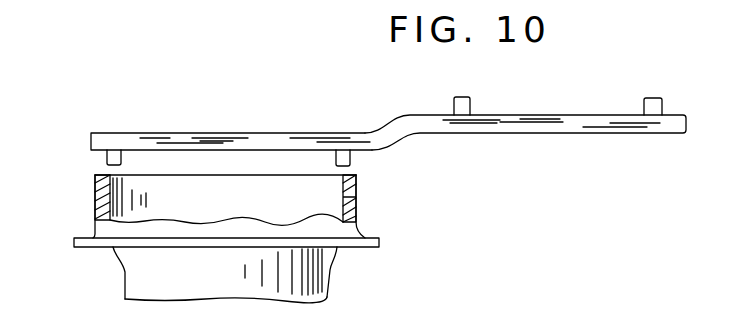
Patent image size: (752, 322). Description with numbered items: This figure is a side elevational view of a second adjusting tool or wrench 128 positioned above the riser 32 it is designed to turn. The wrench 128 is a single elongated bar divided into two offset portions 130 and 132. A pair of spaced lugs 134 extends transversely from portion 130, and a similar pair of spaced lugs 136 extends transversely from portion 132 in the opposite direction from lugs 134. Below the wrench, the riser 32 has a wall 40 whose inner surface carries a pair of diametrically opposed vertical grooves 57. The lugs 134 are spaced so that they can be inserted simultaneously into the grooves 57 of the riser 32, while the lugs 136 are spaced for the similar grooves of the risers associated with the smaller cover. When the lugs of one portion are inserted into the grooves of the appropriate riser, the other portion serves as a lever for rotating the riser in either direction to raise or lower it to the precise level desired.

The second adjusting tool 128 is at (138, 119).
The offset portion 130 is at (213, 140).
The offset portion 132 is at (620, 125).
The spaced lugs 134 is at (105, 157).
The spaced lugs 136 is at (645, 100).
The vertical grooves 57 is at (103, 193).
The wall 40 is at (352, 212).
The riser 32 is at (405, 257).